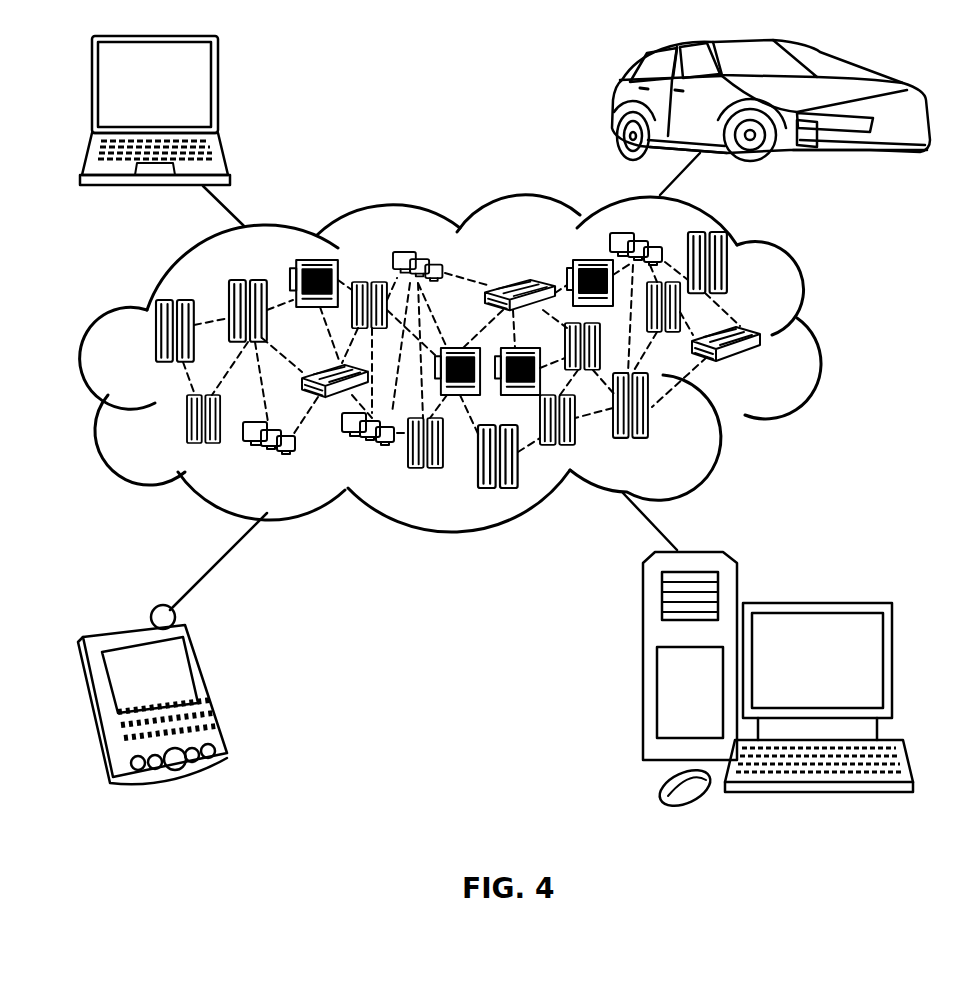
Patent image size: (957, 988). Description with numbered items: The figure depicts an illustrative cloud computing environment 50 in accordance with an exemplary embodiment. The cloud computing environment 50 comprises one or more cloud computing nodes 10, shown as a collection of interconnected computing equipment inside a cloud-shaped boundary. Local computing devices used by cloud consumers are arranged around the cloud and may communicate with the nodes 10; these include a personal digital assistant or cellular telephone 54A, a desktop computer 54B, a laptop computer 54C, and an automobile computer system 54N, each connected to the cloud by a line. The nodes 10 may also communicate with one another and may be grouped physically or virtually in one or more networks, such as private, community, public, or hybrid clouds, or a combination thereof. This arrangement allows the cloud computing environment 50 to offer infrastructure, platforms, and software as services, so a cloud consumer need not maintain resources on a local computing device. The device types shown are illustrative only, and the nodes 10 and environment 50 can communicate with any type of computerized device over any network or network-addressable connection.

The cloud computing node 10 is at (760, 368).
The cloud computing environment 50 is at (813, 337).
The personal digital assistant or cellular telephone 54A is at (213, 692).
The desktop computer 54B is at (815, 603).
The laptop computer 54C is at (218, 91).
The automobile computer system 54N is at (617, 106).